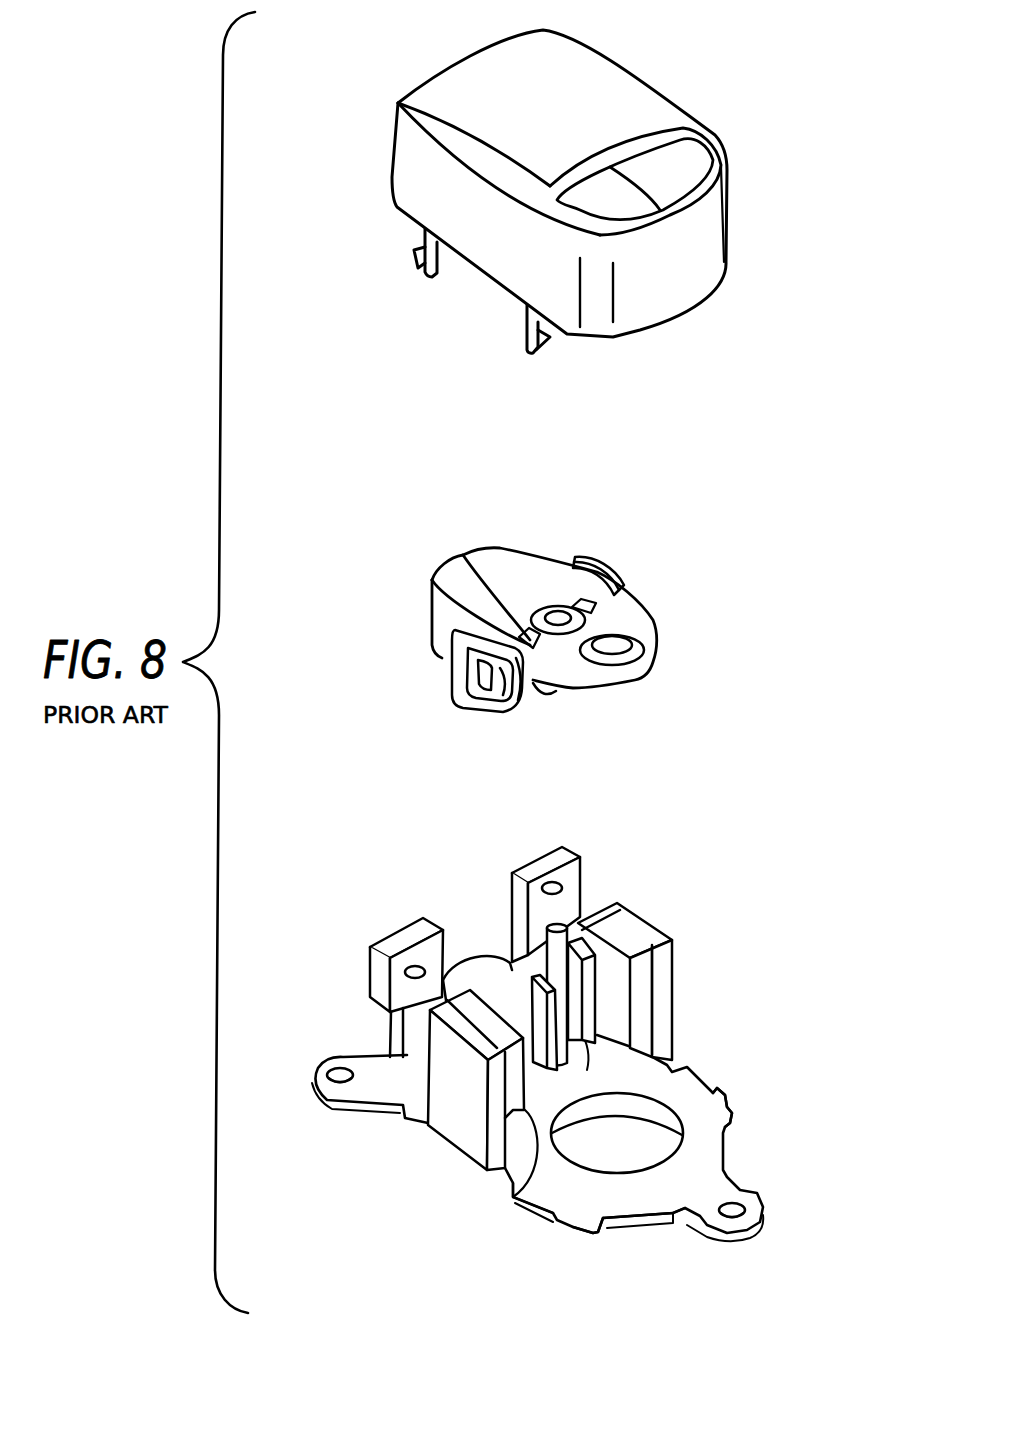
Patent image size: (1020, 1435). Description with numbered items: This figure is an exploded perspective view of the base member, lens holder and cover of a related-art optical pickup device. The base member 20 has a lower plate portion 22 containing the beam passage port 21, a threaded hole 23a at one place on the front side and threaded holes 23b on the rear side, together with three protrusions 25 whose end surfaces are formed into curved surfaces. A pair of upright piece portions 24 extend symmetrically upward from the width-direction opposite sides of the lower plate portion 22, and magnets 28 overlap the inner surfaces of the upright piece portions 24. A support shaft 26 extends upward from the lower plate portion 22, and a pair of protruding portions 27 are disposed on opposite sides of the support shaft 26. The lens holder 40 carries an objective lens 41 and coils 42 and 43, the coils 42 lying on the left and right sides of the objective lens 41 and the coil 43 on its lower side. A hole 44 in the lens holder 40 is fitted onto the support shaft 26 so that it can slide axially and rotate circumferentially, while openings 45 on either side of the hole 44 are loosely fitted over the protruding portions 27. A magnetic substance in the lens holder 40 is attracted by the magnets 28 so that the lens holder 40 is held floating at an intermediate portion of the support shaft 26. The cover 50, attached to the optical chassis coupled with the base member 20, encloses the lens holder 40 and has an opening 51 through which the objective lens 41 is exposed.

The base member 20 is at (757, 1120).
The beam passage port 21 is at (643, 1133).
The lower plate portion 22 is at (657, 1198).
The threaded hole 23a is at (748, 1207).
The threaded hole 23b is at (343, 1073).
The upright piece portion 24 is at (647, 917).
The protrusion 25 is at (468, 963).
The support shaft 26 is at (551, 948).
The protruding portion 27 is at (593, 982).
The magnet 28 is at (640, 997).
The lens holder 40 is at (653, 583).
The objective lens 41 is at (628, 643).
The coil 42 is at (448, 660).
The coil 43 is at (548, 694).
The hole 44 is at (557, 615).
The opening 45 is at (527, 633).
The cover 50 is at (745, 198).
The opening 51 is at (700, 160).